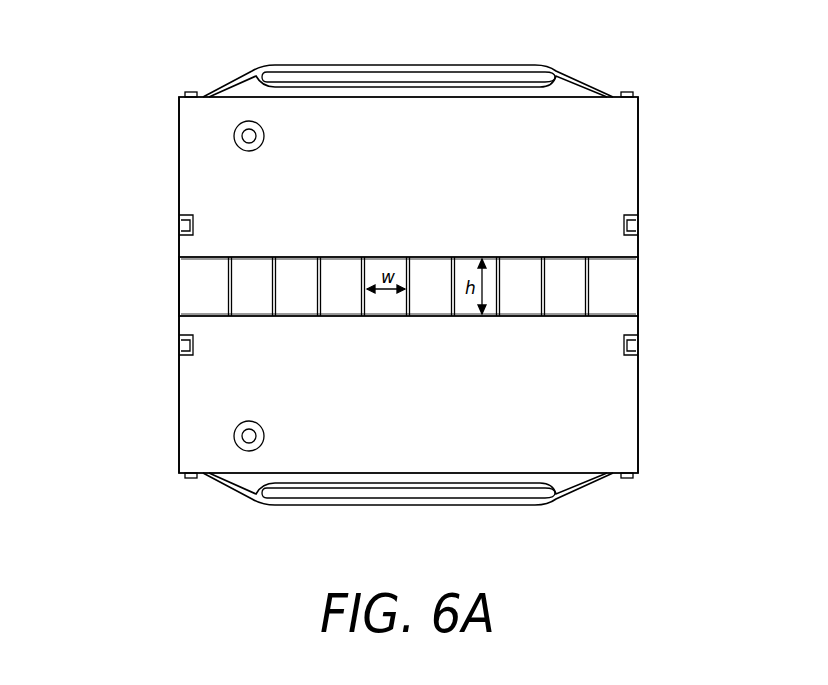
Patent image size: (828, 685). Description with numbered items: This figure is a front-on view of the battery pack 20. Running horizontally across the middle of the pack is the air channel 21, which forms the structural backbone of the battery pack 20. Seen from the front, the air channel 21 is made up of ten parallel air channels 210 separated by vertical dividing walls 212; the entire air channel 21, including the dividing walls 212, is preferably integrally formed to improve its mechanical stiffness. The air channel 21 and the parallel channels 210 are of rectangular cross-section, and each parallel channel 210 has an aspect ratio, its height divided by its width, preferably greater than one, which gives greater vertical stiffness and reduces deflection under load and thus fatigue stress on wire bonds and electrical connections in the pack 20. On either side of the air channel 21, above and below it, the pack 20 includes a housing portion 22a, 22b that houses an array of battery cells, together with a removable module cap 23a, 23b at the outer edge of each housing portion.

The battery pack 20 is at (196, 38).
The air channel 21 is at (165, 276).
The housing portion 22a is at (198, 173).
The housing portion 22b is at (198, 424).
The removable module cap 23a is at (592, 80).
The removable module cap 23b is at (590, 496).
The parallel air channels 210 is at (620, 278).
The vertical dividing walls 212 is at (598, 300).